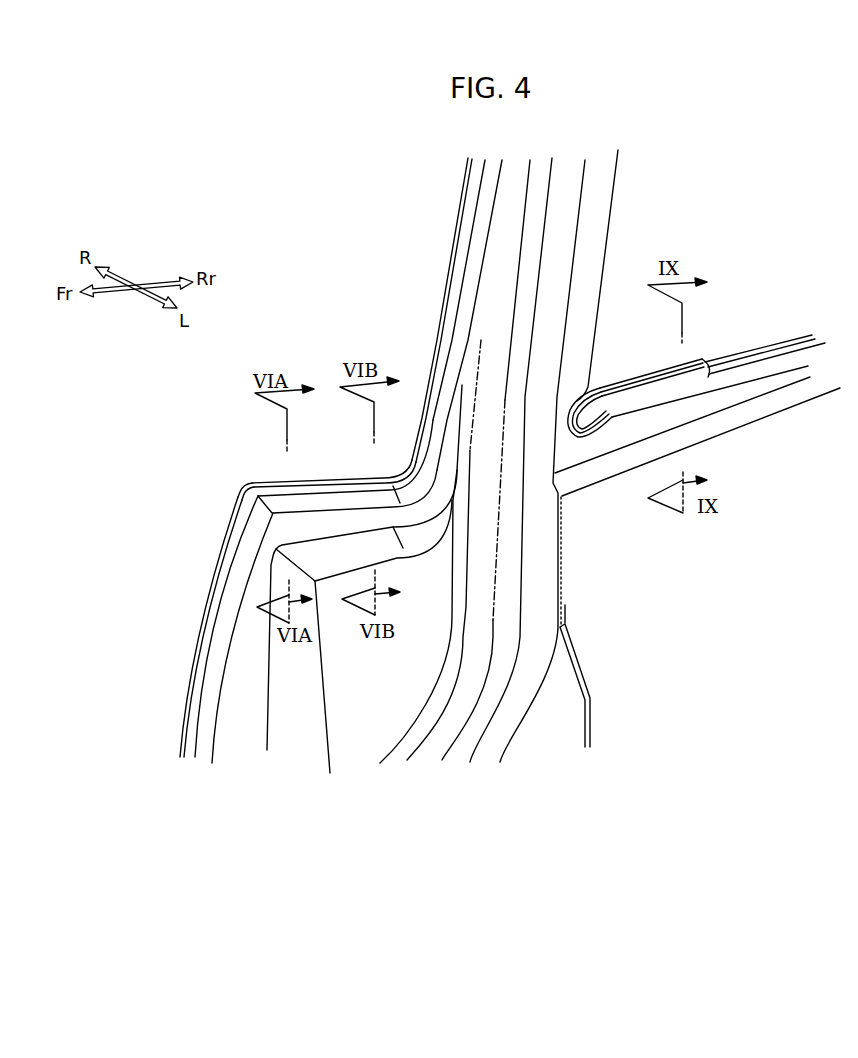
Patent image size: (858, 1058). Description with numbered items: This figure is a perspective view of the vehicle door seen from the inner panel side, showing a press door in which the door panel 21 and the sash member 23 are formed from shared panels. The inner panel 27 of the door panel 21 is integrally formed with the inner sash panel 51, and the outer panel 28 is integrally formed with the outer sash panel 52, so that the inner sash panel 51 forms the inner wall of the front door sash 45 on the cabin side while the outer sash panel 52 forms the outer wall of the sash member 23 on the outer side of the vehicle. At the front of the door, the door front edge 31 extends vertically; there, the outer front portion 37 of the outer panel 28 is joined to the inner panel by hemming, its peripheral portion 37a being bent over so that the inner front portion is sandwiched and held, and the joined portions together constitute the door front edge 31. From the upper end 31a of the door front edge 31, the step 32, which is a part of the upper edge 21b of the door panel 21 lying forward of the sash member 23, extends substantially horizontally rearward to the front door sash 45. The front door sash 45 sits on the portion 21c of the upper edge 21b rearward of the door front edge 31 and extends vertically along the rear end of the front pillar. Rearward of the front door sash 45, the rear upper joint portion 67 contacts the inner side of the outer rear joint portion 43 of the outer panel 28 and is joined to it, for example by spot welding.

The door panel 21 is at (213, 530).
The upper edge 21b is at (640, 420).
The portion of the upper edge 21c is at (438, 487).
The sash member 23 is at (458, 173).
The inner panel 27 is at (422, 640).
The outer panel 28 is at (755, 362).
The door front edge 31 is at (210, 622).
The upper end of the door front edge 31a is at (243, 487).
The step 32 is at (343, 483).
The outer front portion 37 is at (210, 577).
The peripheral portion 37a is at (203, 662).
The outer rear joint portion 43 is at (668, 365).
The front door sash 45 is at (423, 315).
The inner sash panel 51 is at (497, 263).
The outer sash panel 52 is at (458, 208).
The rear upper joint portion 67 is at (709, 372).